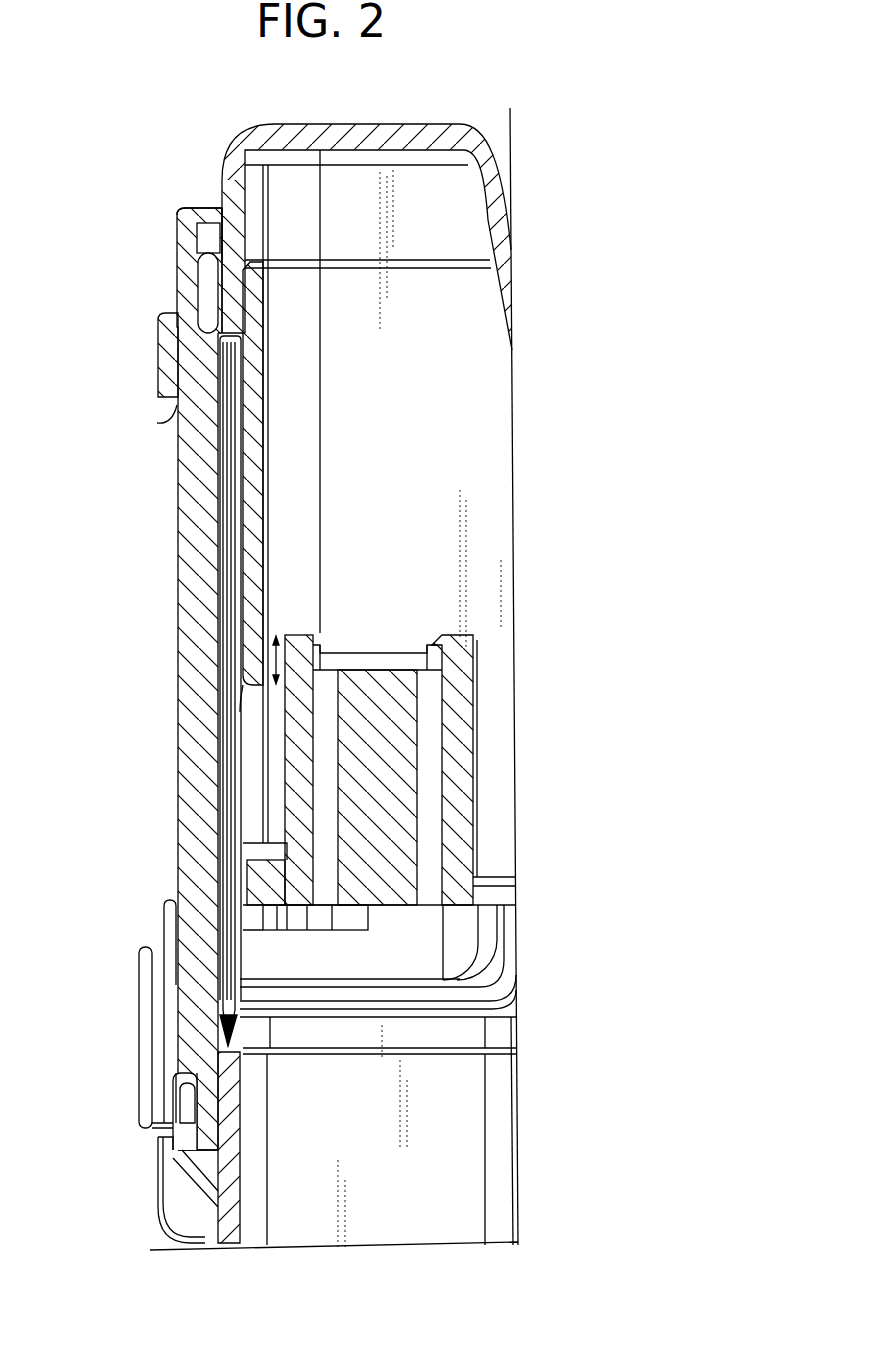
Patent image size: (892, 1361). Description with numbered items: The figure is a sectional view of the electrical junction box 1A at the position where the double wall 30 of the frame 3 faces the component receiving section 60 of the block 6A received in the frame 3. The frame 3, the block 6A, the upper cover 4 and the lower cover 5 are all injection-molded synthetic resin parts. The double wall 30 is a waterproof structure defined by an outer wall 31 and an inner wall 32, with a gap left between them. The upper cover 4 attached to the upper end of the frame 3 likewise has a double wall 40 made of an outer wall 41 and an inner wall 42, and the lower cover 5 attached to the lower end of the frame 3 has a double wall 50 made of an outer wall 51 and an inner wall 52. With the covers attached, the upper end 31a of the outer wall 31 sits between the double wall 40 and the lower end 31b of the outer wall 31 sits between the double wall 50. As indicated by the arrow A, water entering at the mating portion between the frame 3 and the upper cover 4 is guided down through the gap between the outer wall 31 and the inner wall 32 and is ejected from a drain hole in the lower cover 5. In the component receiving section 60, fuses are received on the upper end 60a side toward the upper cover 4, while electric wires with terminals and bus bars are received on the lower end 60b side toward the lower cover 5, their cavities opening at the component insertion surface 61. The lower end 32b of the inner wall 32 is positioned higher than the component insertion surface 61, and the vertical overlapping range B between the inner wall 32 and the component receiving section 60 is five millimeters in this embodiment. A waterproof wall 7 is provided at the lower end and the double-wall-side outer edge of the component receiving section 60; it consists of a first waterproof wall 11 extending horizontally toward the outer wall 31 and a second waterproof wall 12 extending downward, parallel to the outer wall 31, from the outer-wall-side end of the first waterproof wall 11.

The electrical junction box 1A is at (565, 138).
The frame 3 is at (178, 593).
The double wall 30 is at (168, 446).
The outer wall 31 is at (185, 455).
The upper end of the outer wall 31a is at (181, 241).
The lower end of the outer wall 31b is at (178, 1150).
The inner wall 32 is at (245, 487).
The lower end of the inner wall 32b is at (240, 717).
The upper cover 4 is at (156, 357).
The double wall of the upper cover 40 is at (134, 278).
The outer wall of the upper cover 41 is at (200, 262).
The inner wall of the upper cover 42 is at (207, 290).
The lower cover 5 is at (208, 1221).
The double wall of the lower cover 50 is at (111, 1025).
The outer wall of the lower cover 51 is at (185, 1104).
The inner wall of the lower cover 52 is at (195, 1082).
The block 6A is at (478, 918).
The component receiving section 60 is at (381, 707).
The upper end of the component receiving section 60a is at (299, 632).
The lower end of the component receiving section 60b is at (290, 926).
The component insertion surface 61 is at (393, 910).
The waterproof wall 7 is at (378, 1025).
The first waterproof wall 11 is at (280, 912).
The second waterproof wall 12 is at (266, 912).
The arrow A is at (220, 773).
The overlapping range B is at (273, 663).